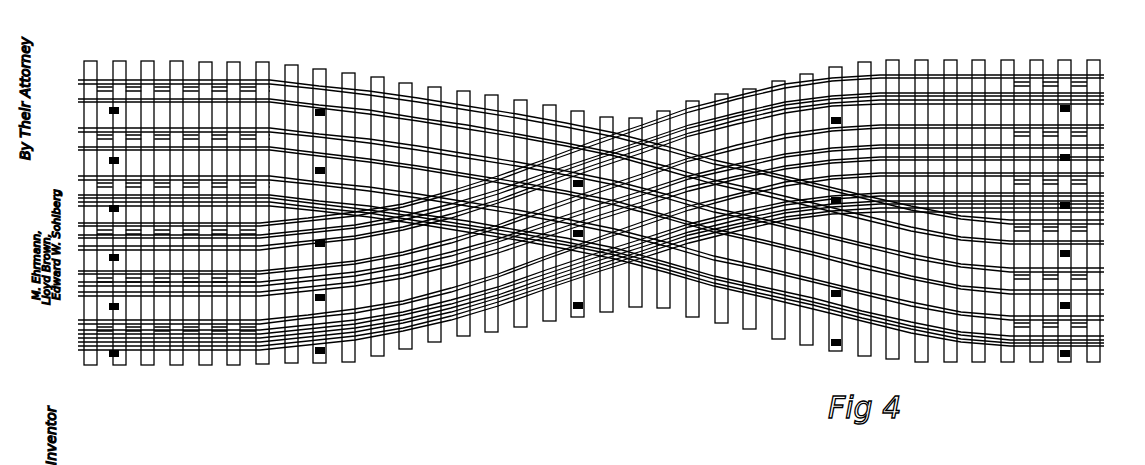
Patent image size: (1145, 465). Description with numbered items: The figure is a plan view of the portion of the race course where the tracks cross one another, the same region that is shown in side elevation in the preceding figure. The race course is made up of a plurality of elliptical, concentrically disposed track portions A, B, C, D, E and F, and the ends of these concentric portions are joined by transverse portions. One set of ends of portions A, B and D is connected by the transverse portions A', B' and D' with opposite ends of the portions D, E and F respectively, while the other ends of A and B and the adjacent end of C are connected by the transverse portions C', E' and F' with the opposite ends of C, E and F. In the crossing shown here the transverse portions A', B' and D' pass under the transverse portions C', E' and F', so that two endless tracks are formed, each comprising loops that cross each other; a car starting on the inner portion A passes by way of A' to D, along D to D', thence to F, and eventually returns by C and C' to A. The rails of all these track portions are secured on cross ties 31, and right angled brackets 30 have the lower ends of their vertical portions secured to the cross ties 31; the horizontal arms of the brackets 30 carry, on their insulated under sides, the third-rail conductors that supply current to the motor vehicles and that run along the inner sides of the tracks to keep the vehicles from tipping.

The right angled bracket 30 is at (327, 112).
The cross tie 31 is at (380, 82).
The inner concentric track portion A is at (1053, 337).
The transverse track portion A′ is at (763, 317).
The concentric track portion B is at (965, 290).
The transverse track portion B′ is at (823, 332).
The concentric track portion C is at (160, 337).
The transverse track portion C′ is at (452, 315).
The concentric track portion D is at (160, 177).
The transverse track portion D′ is at (503, 108).
The concentric track portion E is at (190, 113).
The concentric track portion F is at (217, 79).